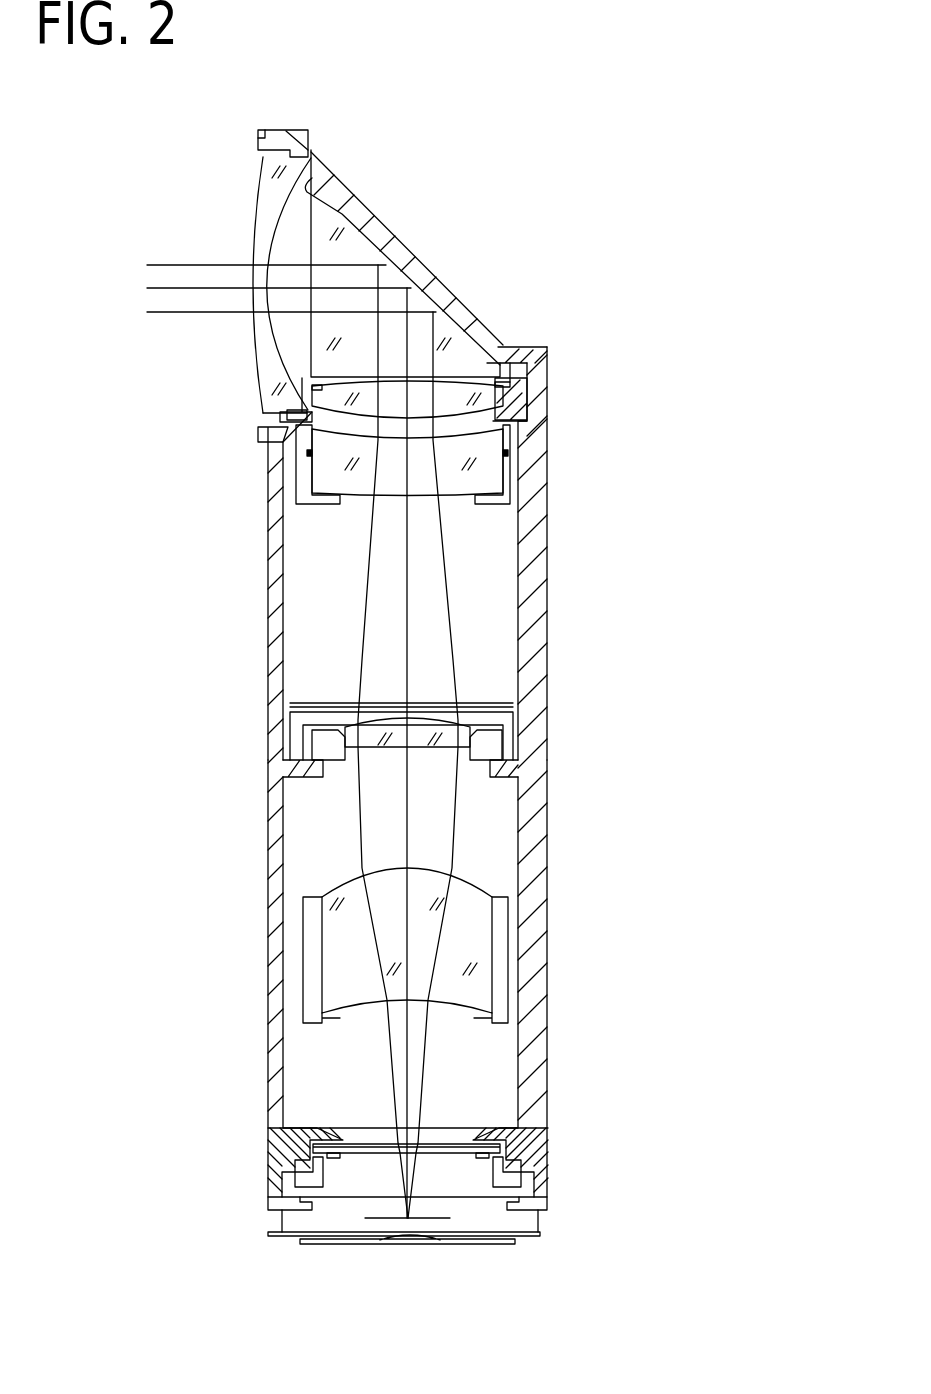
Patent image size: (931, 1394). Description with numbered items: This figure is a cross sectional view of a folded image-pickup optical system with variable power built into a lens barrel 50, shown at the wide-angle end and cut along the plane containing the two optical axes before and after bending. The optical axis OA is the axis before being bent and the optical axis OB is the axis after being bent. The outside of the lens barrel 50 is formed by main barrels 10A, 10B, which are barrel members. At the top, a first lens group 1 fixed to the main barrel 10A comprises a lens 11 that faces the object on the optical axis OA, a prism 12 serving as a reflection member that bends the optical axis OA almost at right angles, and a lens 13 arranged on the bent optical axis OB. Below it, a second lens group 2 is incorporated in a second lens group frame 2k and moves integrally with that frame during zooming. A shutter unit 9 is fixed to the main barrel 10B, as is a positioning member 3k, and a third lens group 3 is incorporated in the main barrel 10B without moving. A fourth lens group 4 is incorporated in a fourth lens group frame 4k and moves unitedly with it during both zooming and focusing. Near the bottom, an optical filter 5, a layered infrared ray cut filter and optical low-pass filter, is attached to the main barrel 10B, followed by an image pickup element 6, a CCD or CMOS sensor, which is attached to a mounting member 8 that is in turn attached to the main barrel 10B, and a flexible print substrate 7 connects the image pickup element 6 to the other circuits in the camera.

The first lens group 1 is at (493, 190).
The lens barrel 50 is at (545, 190).
The lens 11 is at (283, 170).
The prism 12 is at (353, 243).
The lens 13 is at (420, 397).
The optical axis before being bent OA is at (165, 288).
The optical axis after being bent OB is at (410, 570).
The second lens group 2 is at (478, 447).
The second lens group frame 2k is at (503, 485).
The main barrel 10A is at (273, 599).
The main barrel 10B is at (277, 1033).
The shutter unit 9 is at (518, 718).
The third lens group 3 is at (418, 742).
The positioning member 3k is at (328, 745).
The fourth lens group 4 is at (467, 903).
The fourth lens group frame 4k is at (500, 937).
The optical filter 5 is at (453, 1147).
The mounting member 8 is at (547, 1203).
The image pickup element 6 is at (490, 1220).
The flexible print substrate 7 is at (547, 1233).